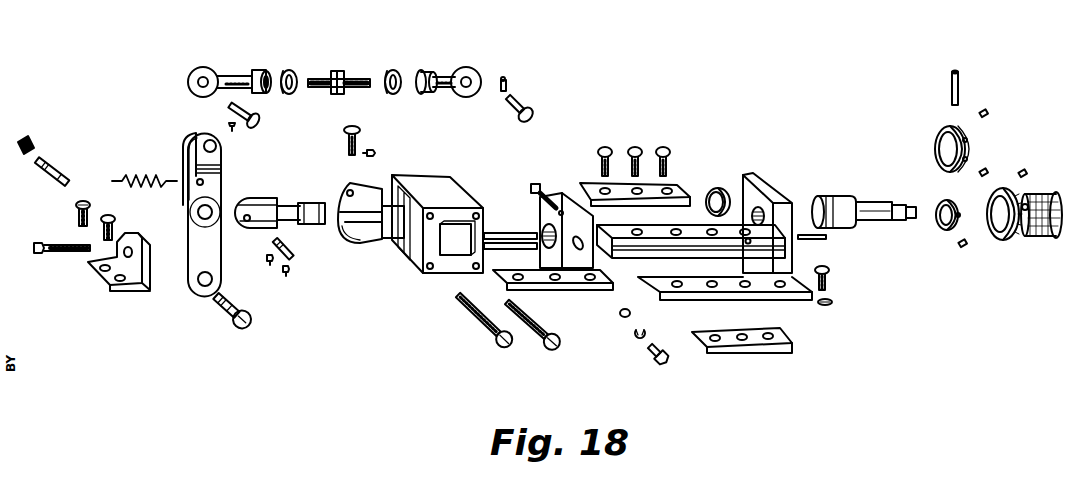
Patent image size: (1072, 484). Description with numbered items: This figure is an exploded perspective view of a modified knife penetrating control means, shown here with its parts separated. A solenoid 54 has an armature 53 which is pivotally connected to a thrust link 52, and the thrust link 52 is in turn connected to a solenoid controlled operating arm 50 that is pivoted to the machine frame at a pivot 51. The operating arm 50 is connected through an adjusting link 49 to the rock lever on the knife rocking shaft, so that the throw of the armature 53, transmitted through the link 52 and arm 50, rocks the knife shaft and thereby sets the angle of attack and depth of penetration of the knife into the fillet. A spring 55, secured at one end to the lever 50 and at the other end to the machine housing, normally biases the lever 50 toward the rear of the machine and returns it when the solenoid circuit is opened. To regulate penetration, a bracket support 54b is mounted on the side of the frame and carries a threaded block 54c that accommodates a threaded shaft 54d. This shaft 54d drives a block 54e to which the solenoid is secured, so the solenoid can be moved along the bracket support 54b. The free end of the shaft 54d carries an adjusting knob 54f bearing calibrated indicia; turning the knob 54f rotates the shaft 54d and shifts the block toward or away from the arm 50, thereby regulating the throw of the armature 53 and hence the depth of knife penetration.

The adjusting link 49 is at (453, 66).
The solenoid controlled operating arm 50 is at (205, 248).
The pivot 51 is at (249, 322).
The thrust link 52 is at (251, 197).
The armature 53 is at (368, 233).
The solenoid 54 is at (420, 190).
The bracket support 54b is at (725, 288).
The threaded block 54c is at (767, 190).
The threaded shaft 54d is at (846, 182).
The block 54e is at (549, 219).
The adjusting knob 54f is at (1003, 240).
The spring 55 is at (152, 170).